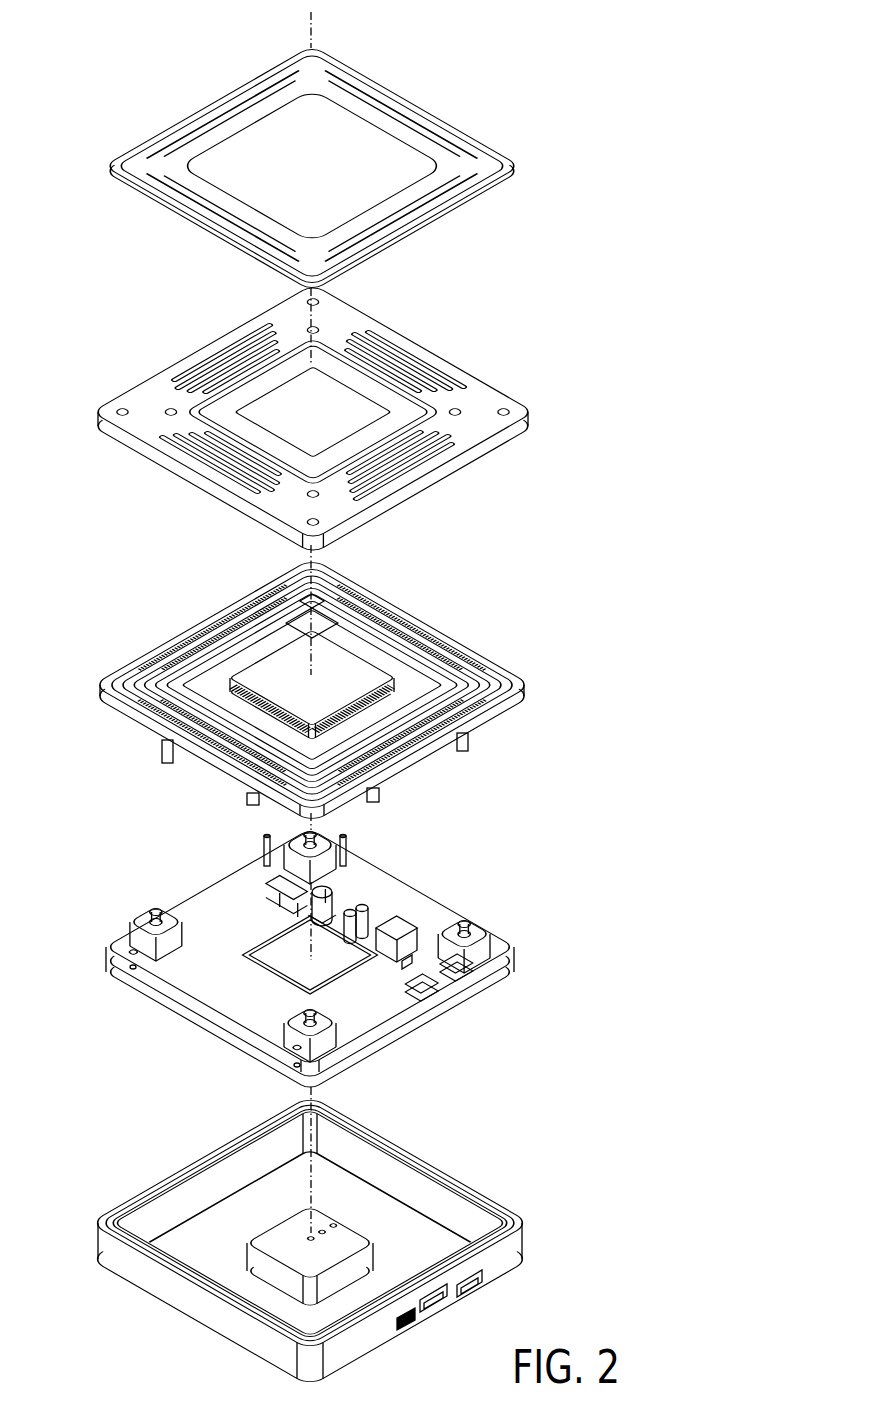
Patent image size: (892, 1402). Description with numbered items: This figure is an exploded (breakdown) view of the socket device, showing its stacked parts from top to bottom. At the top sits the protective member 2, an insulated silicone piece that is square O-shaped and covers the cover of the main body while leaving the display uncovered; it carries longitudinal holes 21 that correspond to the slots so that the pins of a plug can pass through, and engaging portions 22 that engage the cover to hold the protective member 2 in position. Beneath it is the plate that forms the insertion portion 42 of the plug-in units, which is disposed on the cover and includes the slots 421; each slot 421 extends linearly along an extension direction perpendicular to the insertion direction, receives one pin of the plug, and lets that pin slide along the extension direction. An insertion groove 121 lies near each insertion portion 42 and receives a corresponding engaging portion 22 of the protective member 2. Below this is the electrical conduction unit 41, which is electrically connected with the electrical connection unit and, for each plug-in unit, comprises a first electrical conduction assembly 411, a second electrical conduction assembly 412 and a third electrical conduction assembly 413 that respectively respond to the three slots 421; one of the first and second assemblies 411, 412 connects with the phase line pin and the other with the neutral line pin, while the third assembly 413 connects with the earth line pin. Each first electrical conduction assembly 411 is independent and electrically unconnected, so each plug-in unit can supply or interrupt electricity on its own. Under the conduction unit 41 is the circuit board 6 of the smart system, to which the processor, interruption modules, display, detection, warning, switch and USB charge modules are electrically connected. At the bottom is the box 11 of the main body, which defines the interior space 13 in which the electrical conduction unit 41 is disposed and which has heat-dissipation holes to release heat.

The protective member 2 is at (377, 716).
The longitudinal holes 21 is at (427, 140).
The engaging portions 22 is at (425, 228).
The insertion portion 42 is at (327, 419).
The slots 421 is at (172, 430).
The insertion groove 121 is at (440, 452).
The electrical conduction unit 41 is at (384, 691).
The second electrical conduction assembly 412 is at (487, 677).
The third electrical conduction assembly 413 is at (470, 684).
The first electrical conduction assembly 411 is at (452, 686).
The circuit board 6 is at (337, 918).
The box 11 is at (342, 1241).
The interior space 13 is at (416, 1198).